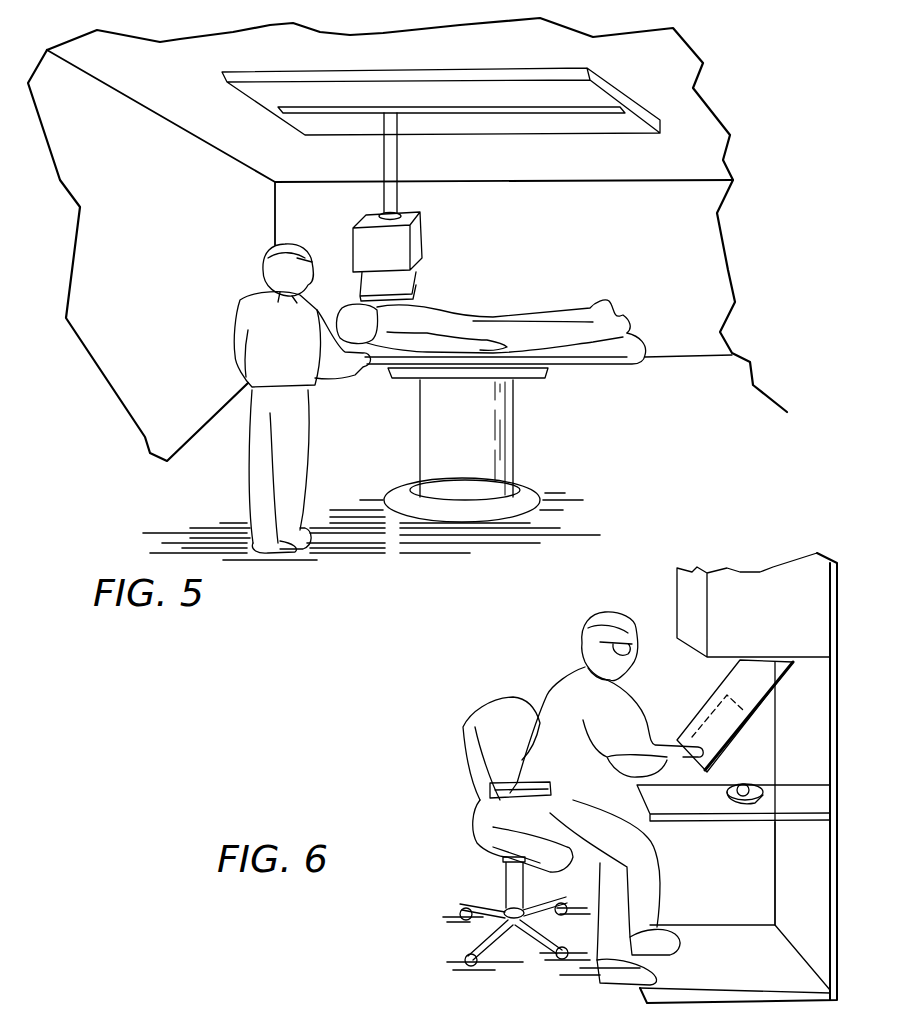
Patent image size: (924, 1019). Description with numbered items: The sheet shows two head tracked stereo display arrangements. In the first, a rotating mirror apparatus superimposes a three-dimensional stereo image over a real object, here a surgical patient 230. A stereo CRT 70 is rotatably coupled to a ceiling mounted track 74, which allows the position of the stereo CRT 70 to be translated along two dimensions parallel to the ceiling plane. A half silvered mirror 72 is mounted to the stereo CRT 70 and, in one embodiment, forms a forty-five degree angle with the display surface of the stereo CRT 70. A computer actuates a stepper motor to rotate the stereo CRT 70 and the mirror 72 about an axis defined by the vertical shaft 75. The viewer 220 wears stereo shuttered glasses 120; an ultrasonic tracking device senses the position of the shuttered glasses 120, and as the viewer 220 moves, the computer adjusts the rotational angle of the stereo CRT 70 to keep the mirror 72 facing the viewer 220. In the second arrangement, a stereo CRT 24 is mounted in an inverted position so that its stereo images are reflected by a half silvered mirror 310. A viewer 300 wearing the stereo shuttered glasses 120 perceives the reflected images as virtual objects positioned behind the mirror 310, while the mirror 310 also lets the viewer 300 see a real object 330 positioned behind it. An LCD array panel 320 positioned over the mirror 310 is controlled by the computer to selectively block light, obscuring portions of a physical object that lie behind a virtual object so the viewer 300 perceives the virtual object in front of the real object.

In FIG. 5, the ceiling mounted track 74 is at (508, 86).
In FIG. 5, the vertical shaft 75 is at (390, 155).
In FIG. 5, the stereo CRT 70 is at (418, 237).
In FIG. 5, the half silvered mirror 72 is at (398, 280).
In FIG. 5, the stereo shuttered glasses 120 is at (312, 260).
In FIG. 6, the stereo shuttered glasses 120 is at (634, 647).
In FIG. 5, the viewer 220 is at (274, 377).
In FIG. 5, the surgical patient 230 is at (440, 317).
In FIG. 6, the stereo CRT 24 is at (772, 580).
In FIG. 6, the viewer 300 is at (606, 776).
In FIG. 6, the mirror 310 is at (770, 678).
In FIG. 6, the LCD array panel 320 is at (722, 728).
In FIG. 6, the real object 330 is at (760, 782).